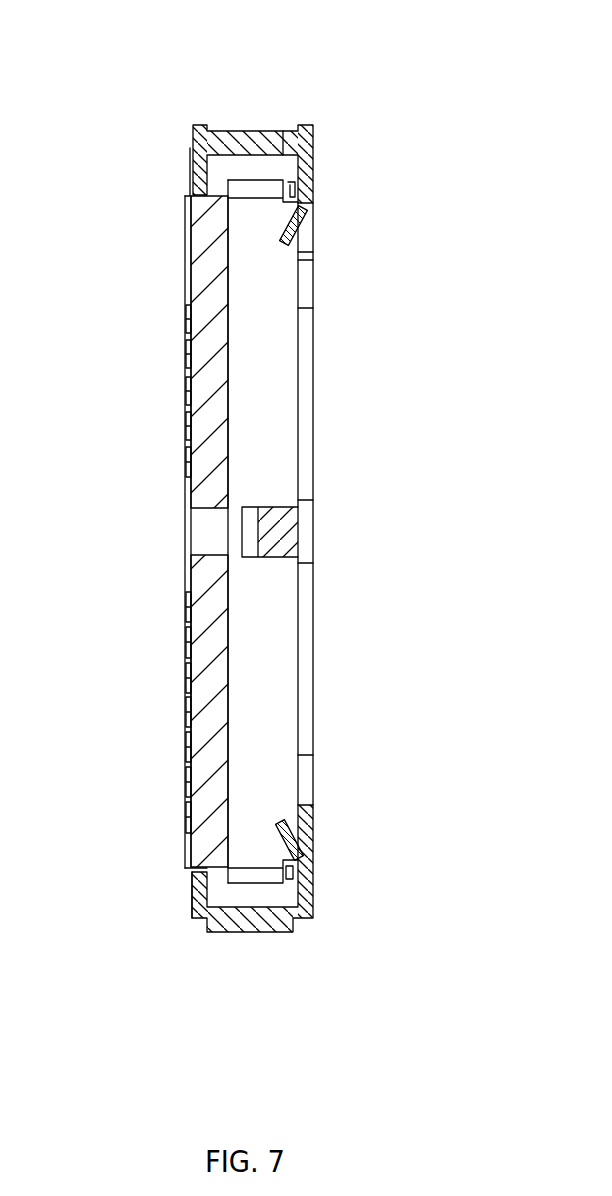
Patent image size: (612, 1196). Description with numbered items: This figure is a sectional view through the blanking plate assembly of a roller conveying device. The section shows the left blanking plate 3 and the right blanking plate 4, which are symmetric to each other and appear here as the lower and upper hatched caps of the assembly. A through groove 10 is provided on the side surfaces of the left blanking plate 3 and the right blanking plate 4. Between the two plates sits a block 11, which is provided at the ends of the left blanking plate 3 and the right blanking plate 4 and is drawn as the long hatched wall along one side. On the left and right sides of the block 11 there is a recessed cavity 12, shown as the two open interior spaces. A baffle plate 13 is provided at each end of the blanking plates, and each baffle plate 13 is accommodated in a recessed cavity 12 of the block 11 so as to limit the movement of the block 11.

The left blanking plate 3 is at (258, 912).
The right blanking plate 4 is at (265, 128).
The through groove 10 is at (295, 128).
The block 11 is at (210, 293).
The recessed cavity 12 is at (258, 400).
The baffle plate 13 is at (305, 212).